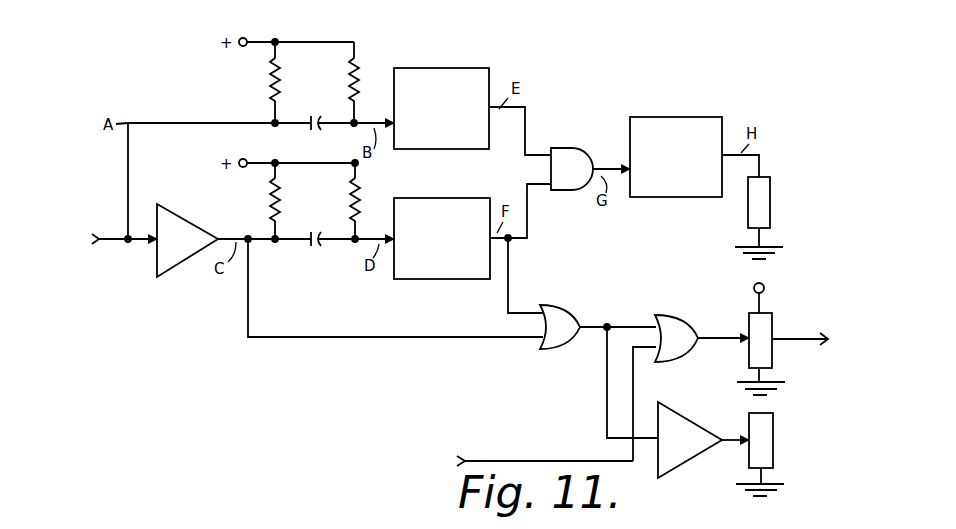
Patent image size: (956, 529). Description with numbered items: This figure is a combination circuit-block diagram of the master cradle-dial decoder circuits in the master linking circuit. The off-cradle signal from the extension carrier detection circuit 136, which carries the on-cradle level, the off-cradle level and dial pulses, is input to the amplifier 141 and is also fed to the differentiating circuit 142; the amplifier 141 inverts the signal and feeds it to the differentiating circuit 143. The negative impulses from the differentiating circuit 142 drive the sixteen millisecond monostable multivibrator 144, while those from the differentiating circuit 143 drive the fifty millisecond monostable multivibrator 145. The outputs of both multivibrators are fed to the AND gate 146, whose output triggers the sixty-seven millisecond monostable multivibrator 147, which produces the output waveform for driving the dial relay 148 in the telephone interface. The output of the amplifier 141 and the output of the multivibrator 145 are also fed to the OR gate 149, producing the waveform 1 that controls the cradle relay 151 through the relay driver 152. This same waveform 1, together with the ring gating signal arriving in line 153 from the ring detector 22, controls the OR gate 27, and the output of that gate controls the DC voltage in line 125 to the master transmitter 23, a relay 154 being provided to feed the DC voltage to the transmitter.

The output signal node of OR gate 1 is at (607, 323).
The OR gate 27 is at (679, 317).
The line 125 is at (794, 339).
The amplifier 141 is at (188, 221).
The differentiating circuit 142 is at (368, 71).
The differentiating circuit 143 is at (322, 258).
The 16 ms monostable multivibrator 144 is at (465, 68).
The 50 ms monostable multivibrator 145 is at (471, 281).
The AND gate 146 is at (571, 149).
The 67 ms monostable multivibrator 147 is at (667, 117).
The dial relay 148 is at (771, 186).
The OR gate 149 is at (553, 305).
The cradle relay 151 is at (775, 434).
The relay driver 152 is at (690, 418).
The line 153 is at (504, 461).
The relay 154 is at (773, 319).
The extension carrier detection circuit 136 is at (96, 238).
The ring detector 22 is at (415, 463).
The output to 23 is at (858, 340).